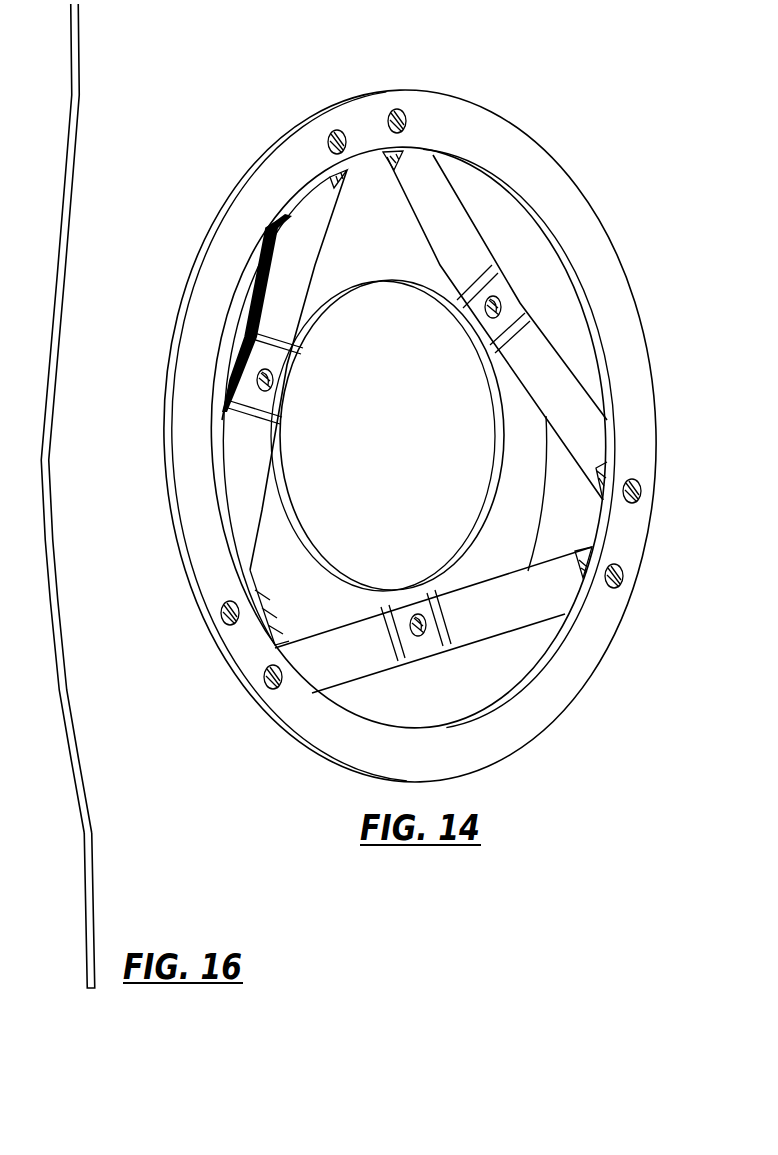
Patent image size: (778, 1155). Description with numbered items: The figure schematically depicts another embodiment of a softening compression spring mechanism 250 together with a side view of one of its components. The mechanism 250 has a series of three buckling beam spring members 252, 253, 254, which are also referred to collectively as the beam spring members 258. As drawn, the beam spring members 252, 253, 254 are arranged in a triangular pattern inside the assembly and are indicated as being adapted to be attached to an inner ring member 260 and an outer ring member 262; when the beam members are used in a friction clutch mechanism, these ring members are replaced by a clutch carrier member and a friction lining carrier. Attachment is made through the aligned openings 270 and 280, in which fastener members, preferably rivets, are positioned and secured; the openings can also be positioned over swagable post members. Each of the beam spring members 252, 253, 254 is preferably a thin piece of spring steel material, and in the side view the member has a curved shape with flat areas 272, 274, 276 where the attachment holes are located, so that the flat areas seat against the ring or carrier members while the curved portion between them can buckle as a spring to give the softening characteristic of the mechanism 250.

In FIG. 14, the compression spring mechanism 250 is at (408, 443).
In FIG. 14, the buckling beam spring member 252 is at (250, 460).
In FIG. 16, the buckling beam spring member 252 is at (136, 496).
In FIG. 14, the buckling beam spring member 253 is at (465, 246).
In FIG. 16, the buckling beam spring member 253 is at (136, 496).
In FIG. 14, the buckling beam spring member 254 is at (348, 668).
In FIG. 16, the buckling beam spring member 254 is at (136, 496).
In FIG. 14, the beam spring members 258 is at (181, 676).
In FIG. 14, the inner ring member 260 is at (504, 463).
In FIG. 14, the outer ring member 262 is at (204, 597).
In FIG. 14, the openings 270 is at (272, 374).
In FIG. 16, the flat area 272 is at (79, 36).
In FIG. 16, the flat area 274 is at (48, 470).
In FIG. 16, the flat area 276 is at (93, 949).
In FIG. 14, the openings 280 is at (339, 131).